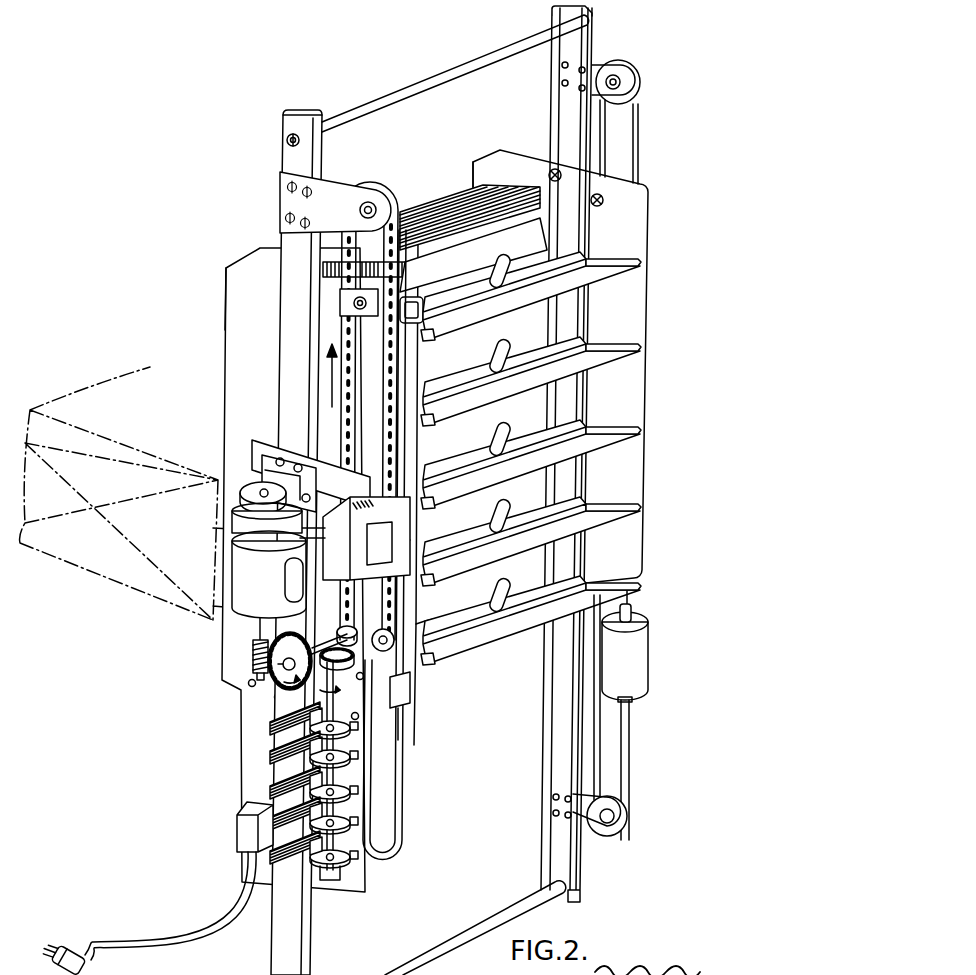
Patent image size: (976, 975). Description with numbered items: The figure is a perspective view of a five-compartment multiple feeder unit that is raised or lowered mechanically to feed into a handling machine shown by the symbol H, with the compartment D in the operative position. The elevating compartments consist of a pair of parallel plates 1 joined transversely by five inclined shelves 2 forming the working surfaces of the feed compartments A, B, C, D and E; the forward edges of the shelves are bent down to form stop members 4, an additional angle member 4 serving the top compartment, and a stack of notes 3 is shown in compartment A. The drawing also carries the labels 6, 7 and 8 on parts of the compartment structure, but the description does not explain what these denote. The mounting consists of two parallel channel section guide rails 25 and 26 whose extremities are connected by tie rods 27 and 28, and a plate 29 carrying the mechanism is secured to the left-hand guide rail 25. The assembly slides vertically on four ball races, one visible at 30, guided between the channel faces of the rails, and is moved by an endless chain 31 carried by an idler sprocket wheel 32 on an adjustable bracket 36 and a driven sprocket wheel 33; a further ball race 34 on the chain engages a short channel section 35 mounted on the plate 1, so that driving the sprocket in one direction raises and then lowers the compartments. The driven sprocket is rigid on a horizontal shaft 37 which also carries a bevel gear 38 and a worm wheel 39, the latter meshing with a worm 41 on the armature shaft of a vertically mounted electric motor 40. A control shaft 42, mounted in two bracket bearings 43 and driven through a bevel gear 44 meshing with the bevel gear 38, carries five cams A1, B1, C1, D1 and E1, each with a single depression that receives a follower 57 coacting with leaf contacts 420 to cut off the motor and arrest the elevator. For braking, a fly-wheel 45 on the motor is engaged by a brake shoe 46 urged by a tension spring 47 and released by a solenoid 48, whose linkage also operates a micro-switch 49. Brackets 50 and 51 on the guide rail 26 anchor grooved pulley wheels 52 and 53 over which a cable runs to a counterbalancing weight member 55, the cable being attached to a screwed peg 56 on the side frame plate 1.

The parallel plates 1 is at (242, 283).
The inclined shelves 2 is at (641, 264).
The stack of notes 3 is at (500, 192).
The stop members 4 is at (447, 194).
The louver blade 6 is at (553, 262).
The shelf 7 is at (465, 273).
The louver handle 8 is at (505, 260).
The left-hand guide rail 25 is at (292, 245).
The right-hand guide rail 26 is at (577, 33).
The tie rod 27 is at (412, 64).
The tie rod 28 is at (473, 937).
The plate 29 is at (252, 723).
The ball race 30 is at (570, 168).
The endless chain 31 is at (396, 358).
The idler sprocket wheel 32 is at (373, 188).
The driven sprocket wheel 33 is at (371, 637).
The ball race 34 is at (360, 308).
The channel section material 35 is at (408, 310).
The adjustable bracket 36 is at (282, 197).
The horizontal shaft 37 is at (322, 640).
The bevel gear 38 is at (340, 622).
The worm wheel 39 is at (253, 683).
The electric motor 40 is at (238, 558).
The worm 41 is at (252, 652).
The control shaft 42 is at (331, 722).
The bracket bearings 43 is at (350, 672).
The bevel gear 44 is at (349, 654).
The fly-wheel 45 is at (262, 488).
The brake shoe 46 is at (293, 470).
The tension spring 47 is at (295, 495).
The solenoid 48 is at (417, 486).
The micro-switch 49 is at (333, 497).
The bracket 50 is at (595, 68).
The bracket 51 is at (585, 820).
The grooved pulley wheel 52 is at (632, 75).
The grooved pulley wheel 53 is at (620, 822).
The weight member 55 is at (627, 688).
The screwed peg 56 is at (600, 202).
The follower 57 is at (305, 772).
The leaf contacts 420 is at (292, 752).
The compartment A is at (628, 234).
The compartment B is at (626, 322).
The compartment C is at (624, 409).
The compartment D is at (624, 484).
The compartment E is at (621, 562).
The cam A1 is at (347, 729).
The cam B1 is at (352, 758).
The cam C1 is at (350, 791).
The cam D1 is at (348, 824).
The cam E1 is at (341, 858).
The handling machine H is at (186, 531).